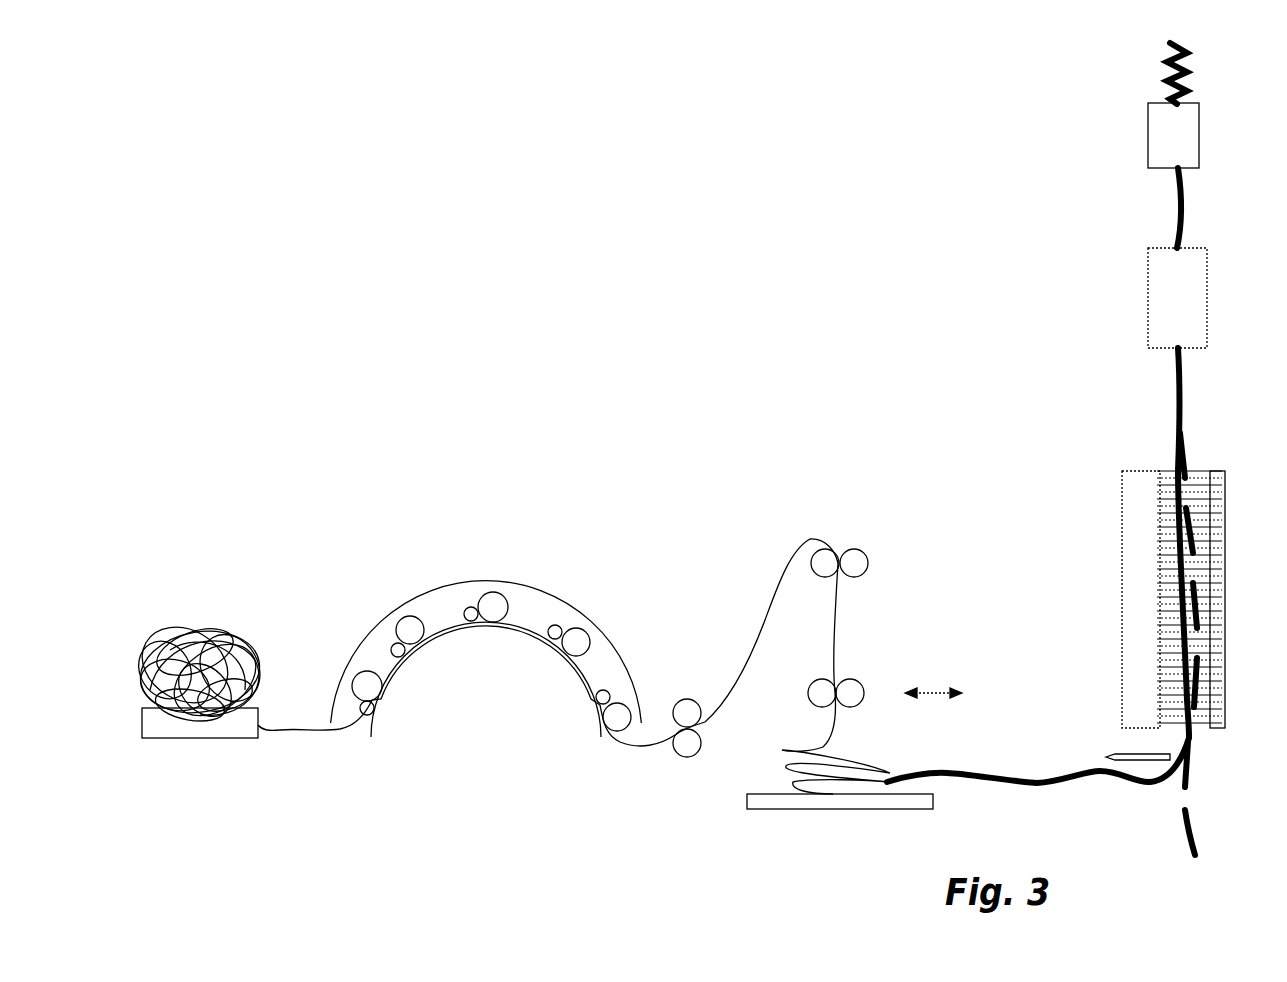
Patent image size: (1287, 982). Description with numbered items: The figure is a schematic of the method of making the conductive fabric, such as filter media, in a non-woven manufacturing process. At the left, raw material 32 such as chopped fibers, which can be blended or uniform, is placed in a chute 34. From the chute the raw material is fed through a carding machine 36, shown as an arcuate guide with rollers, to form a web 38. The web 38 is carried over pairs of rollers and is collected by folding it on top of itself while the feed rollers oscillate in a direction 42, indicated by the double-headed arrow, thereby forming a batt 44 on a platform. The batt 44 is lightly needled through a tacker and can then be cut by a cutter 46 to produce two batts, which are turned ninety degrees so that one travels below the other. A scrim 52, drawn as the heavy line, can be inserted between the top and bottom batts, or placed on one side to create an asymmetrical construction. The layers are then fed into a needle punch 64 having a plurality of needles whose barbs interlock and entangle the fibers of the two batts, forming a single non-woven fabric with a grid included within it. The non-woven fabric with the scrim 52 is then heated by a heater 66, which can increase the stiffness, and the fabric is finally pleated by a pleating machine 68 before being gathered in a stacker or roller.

The raw material 32 is at (181, 588).
The chute 34 is at (168, 738).
The carding machine 36 is at (505, 580).
The web 38 is at (623, 742).
The direction 42 is at (930, 690).
The batt 44 is at (816, 790).
The cutter 46 is at (1108, 757).
The scrim 52 is at (1192, 818).
The needle punch 64 is at (1122, 566).
The heater 66 is at (1148, 290).
The pleating machine 68 is at (1148, 133).